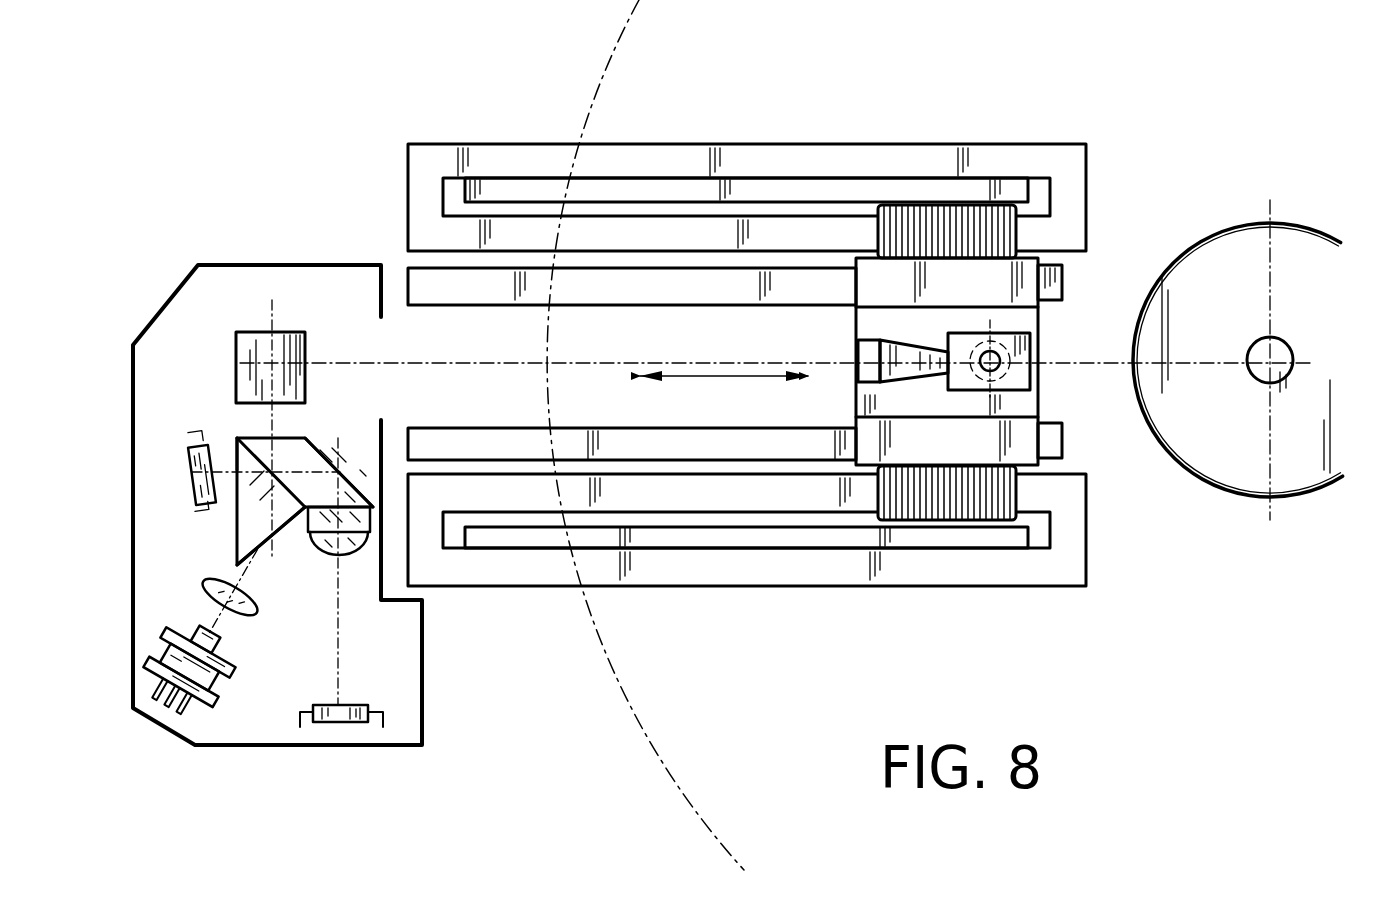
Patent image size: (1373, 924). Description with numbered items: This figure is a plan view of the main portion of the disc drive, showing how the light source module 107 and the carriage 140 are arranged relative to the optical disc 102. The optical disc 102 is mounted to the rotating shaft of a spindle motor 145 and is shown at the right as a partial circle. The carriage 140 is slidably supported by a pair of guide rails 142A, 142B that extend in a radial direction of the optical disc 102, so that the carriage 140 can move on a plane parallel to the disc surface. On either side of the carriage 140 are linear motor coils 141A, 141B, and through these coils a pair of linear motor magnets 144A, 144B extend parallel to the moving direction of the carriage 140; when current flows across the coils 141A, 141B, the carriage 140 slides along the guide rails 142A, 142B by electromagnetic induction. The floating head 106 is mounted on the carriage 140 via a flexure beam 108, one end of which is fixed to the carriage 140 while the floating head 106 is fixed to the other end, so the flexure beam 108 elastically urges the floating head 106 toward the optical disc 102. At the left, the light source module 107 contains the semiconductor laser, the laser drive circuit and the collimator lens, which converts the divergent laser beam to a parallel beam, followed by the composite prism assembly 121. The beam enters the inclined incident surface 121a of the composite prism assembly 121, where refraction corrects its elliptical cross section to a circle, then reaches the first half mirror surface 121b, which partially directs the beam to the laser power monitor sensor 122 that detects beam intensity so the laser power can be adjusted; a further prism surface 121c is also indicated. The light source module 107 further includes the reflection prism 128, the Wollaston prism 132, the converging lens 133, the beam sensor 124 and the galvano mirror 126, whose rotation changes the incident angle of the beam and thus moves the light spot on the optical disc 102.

The optical disc 102 is at (607, 70).
The floating head 106 is at (1022, 377).
The light source module 107 is at (335, 747).
The flexure beam 108 is at (903, 341).
The composite prism assembly 121 is at (348, 452).
The incident surface 121a is at (238, 560).
The first half mirror surface 121b is at (245, 456).
The prism exit surface 121c is at (316, 457).
The laser power monitor sensor 122 is at (198, 481).
The beam sensor 124 is at (345, 705).
The galvano mirror 126 is at (277, 350).
The reflection prism 128 is at (236, 345).
The Wollaston prism 132 is at (367, 554).
The converging lens 133 is at (330, 555).
The carriage 140 is at (1022, 322).
The linear motor coil 141A is at (930, 230).
The linear motor coil 141B is at (955, 503).
The guide rail 142A is at (693, 298).
The guide rail 142B is at (675, 430).
The linear motor magnet 144A is at (655, 236).
The linear motor magnet 144B is at (760, 497).
The spindle motor 145 is at (1243, 457).